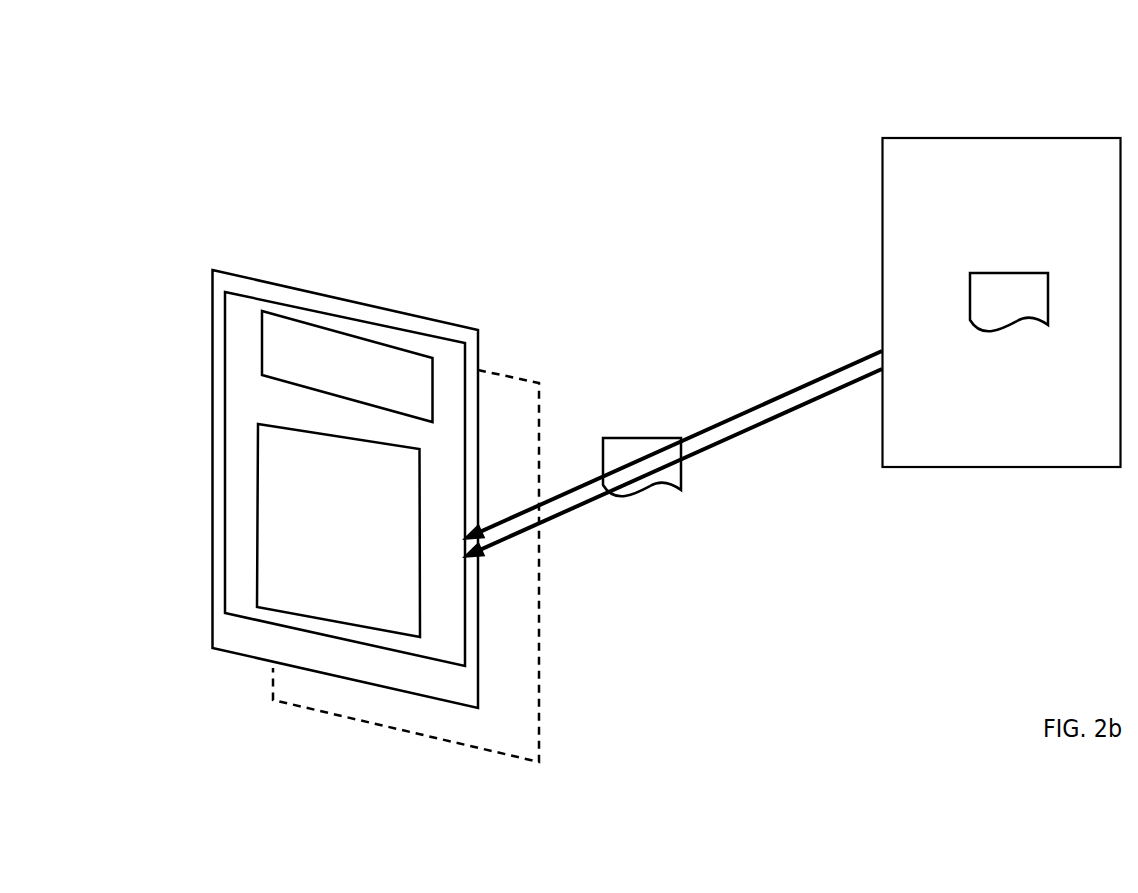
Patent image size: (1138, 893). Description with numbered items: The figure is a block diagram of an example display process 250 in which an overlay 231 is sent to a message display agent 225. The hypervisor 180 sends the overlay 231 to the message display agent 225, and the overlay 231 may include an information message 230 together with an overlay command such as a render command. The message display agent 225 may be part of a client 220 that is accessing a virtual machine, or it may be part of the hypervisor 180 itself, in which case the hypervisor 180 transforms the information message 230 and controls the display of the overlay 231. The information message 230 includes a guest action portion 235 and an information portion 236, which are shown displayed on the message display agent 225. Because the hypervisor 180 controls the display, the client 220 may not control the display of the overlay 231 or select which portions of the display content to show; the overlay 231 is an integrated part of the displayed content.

The display process 250 is at (433, 86).
The hypervisor 180 is at (1002, 302).
The information message 230 is at (1009, 302).
The overlay 231 is at (433, 338).
The message display agent 225 is at (466, 328).
The client 220 is at (528, 383).
The guest action portion 235 is at (336, 328).
The information portion 236 is at (258, 426).